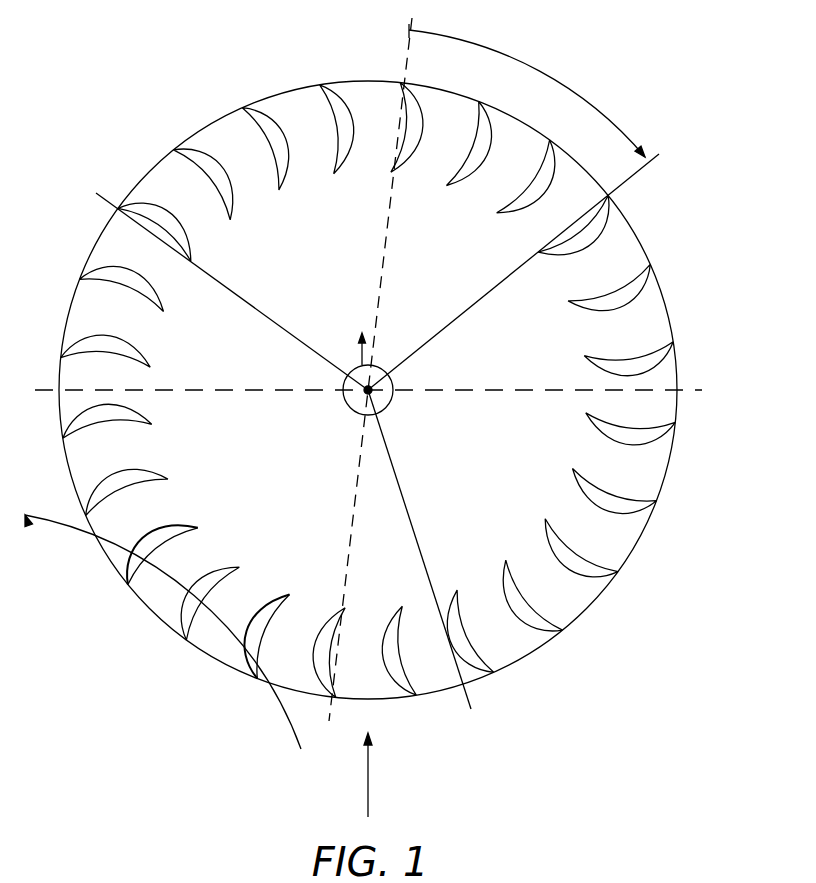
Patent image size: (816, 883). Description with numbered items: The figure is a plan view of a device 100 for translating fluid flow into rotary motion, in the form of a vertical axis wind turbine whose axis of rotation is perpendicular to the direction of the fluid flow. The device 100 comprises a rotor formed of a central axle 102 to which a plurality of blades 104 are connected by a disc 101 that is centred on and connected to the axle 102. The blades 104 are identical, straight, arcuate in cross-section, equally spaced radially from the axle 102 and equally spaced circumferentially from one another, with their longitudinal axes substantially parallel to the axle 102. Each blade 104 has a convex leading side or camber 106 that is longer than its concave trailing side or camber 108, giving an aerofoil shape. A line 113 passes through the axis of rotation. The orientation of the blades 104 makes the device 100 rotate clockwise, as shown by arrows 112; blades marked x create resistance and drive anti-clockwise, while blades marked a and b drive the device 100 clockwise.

The device 100 is at (363, 417).
The disc 101 is at (156, 180).
The axle 102 is at (392, 383).
The blades 104 is at (368, 390).
The leading side or camber 106 is at (193, 527).
The trailing side or camber 108 is at (195, 530).
The arrows 112 is at (542, 70).
The line 113 is at (345, 556).